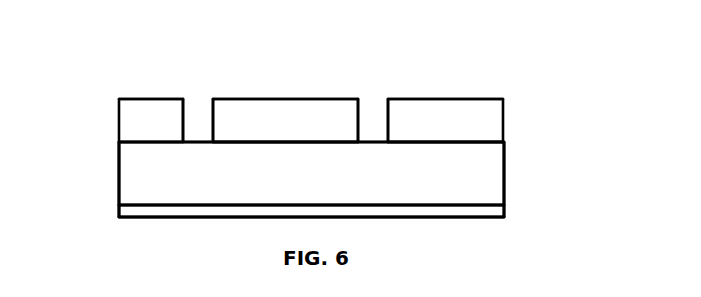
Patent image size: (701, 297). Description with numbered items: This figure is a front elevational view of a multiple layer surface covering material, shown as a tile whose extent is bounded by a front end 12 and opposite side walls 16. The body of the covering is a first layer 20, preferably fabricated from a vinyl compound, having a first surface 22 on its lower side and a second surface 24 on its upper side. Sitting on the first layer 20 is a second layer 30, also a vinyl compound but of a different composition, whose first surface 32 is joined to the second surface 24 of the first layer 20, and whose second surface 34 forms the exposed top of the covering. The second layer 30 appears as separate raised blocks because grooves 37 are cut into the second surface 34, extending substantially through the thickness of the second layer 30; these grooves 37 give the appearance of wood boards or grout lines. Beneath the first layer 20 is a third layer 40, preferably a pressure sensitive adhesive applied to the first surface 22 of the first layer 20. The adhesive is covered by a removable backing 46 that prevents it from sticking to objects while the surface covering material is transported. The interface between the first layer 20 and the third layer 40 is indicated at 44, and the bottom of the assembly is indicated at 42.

The front end 12 is at (463, 179).
The side walls 16 is at (118, 170).
The first layer 20 is at (272, 193).
The first surface 22 is at (163, 203).
The second surface 24 is at (191, 144).
The second layer 30 is at (158, 130).
The first surface 32 is at (304, 140).
The second surface 34 is at (138, 98).
The grooves 37 is at (185, 118).
The third layer 40 is at (154, 210).
The bottom surface 42 is at (267, 217).
The interface line 44 is at (328, 203).
The removable backing 46 is at (410, 218).